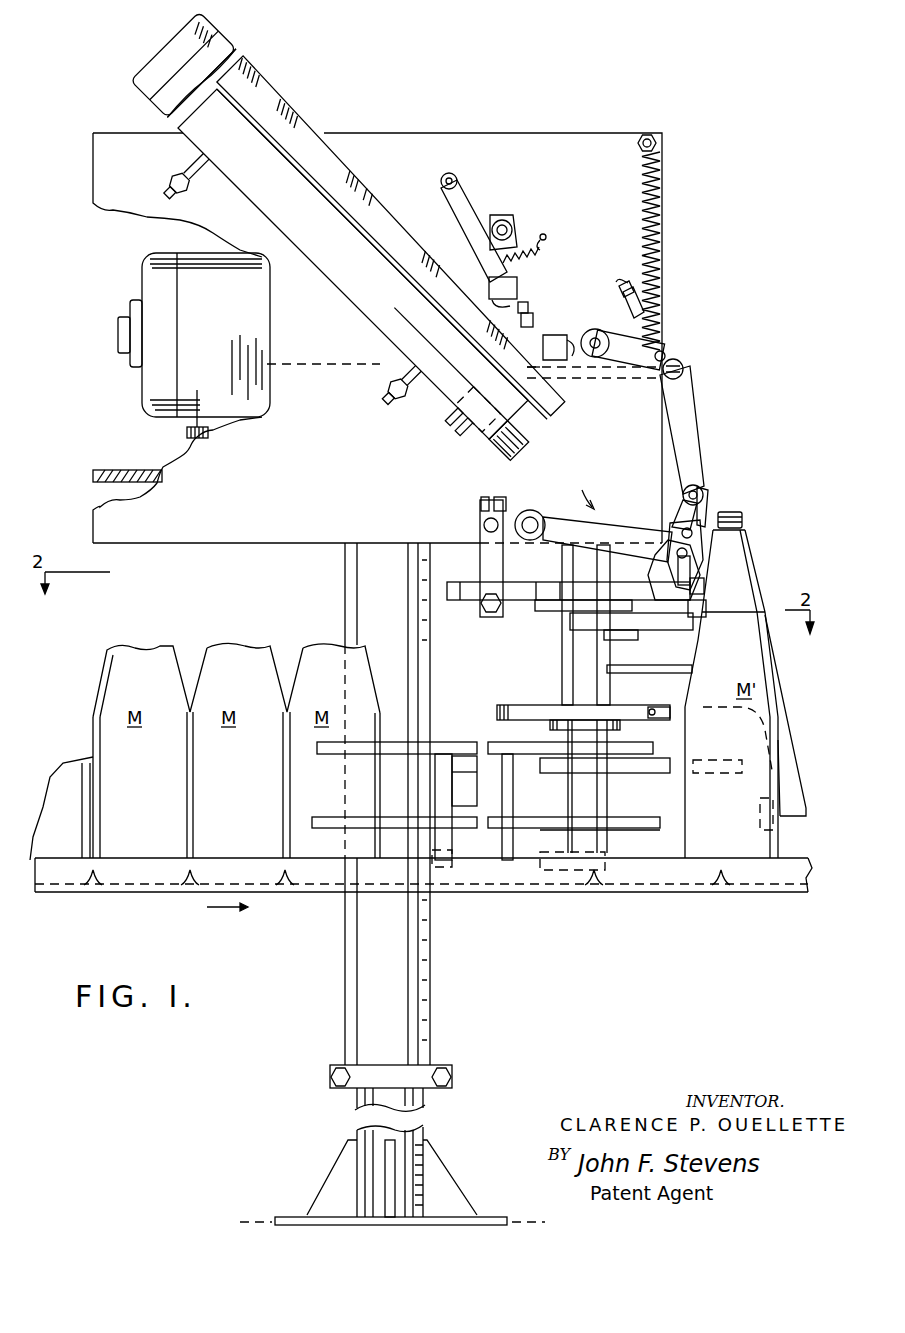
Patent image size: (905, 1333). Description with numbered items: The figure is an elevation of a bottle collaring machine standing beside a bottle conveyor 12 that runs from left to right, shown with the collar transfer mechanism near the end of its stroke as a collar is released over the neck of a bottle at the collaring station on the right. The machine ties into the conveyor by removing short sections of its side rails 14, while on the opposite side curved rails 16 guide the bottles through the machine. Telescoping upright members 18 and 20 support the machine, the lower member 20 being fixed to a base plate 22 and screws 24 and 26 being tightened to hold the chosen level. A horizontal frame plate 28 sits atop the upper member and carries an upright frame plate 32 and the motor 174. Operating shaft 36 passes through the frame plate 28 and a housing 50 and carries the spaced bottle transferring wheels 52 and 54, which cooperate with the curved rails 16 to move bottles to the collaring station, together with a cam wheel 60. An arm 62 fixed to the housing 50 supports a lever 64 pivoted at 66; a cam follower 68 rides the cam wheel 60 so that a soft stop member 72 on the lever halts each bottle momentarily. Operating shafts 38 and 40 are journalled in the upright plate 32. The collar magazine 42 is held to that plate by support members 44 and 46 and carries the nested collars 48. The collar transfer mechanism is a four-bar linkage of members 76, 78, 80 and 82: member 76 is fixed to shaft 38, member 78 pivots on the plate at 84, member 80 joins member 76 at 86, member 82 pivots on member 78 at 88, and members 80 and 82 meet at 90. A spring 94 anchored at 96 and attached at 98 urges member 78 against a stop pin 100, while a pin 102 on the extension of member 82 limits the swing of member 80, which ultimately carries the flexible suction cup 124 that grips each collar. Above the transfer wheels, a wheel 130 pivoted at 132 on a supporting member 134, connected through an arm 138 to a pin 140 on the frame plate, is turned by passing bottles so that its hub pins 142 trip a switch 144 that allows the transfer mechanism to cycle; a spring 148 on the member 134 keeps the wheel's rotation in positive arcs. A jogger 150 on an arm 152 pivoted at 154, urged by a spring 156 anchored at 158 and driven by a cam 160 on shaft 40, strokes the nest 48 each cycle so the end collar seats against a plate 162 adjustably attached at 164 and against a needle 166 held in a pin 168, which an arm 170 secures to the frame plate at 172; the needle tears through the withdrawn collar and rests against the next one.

The bottle conveyor 12 is at (148, 890).
The side rails 14 is at (458, 742).
The curved rails 16 is at (497, 742).
The telescoping upright member 18 is at (394, 988).
The lower upright member 20 is at (399, 1107).
The base plate 22 is at (283, 1216).
The screw 24 is at (330, 1074).
The screw 26 is at (446, 1072).
The horizontal frame plate 28 is at (128, 470).
The upright frame plate 32 is at (294, 475).
The operating shaft 36 is at (560, 730).
The operating shaft 38 is at (530, 510).
The operating shaft 40 is at (506, 225).
The collar magazine 42 is at (364, 260).
The support member 44 is at (178, 176).
The support member 46 is at (398, 390).
The nested collars 48 is at (328, 167).
The housing 50 is at (594, 676).
The bottle transferring wheel 52 is at (640, 773).
The bottle transferring wheel 54 is at (664, 830).
The cam wheel 60 is at (540, 705).
The arm 62 is at (640, 676).
The lever 64 is at (786, 768).
The pivot 66 is at (700, 702).
The cam follower 68 is at (670, 707).
The stop member 72 is at (758, 812).
The linkage drive member 76 is at (577, 541).
The linkage member 78 is at (630, 362).
The linkage member 80 is at (678, 513).
The linkage member 82 is at (694, 445).
The pivot 84 is at (603, 333).
The pivot pin 86 is at (698, 560).
The pivot 88 is at (684, 366).
The pivot 90 is at (700, 484).
The spring 94 is at (658, 192).
The spring anchor 96 is at (658, 140).
The spring attachment 98 is at (664, 352).
The stop pin 100 is at (640, 287).
The pin 102 is at (710, 508).
The suction cup 124 is at (704, 590).
The wheel 130 is at (690, 630).
The pivot 132 is at (636, 640).
The supporting member 134 is at (464, 587).
The arm 138 is at (498, 572).
The pin 140 is at (486, 521).
The pin 142 is at (660, 555).
The switch 144 is at (704, 614).
The spring 148 is at (558, 612).
The jogger 150 is at (516, 290).
The arm 152 is at (470, 203).
The pivot 154 is at (452, 176).
The spring 156 is at (542, 248).
The spring anchor 158 is at (547, 235).
The cam 160 is at (513, 228).
The plate 162 is at (520, 412).
The adjustable attachment 164 is at (472, 408).
The needle 166 is at (558, 380).
The pin 168 is at (566, 380).
The arm 170 is at (535, 322).
The attachment point 172 is at (530, 306).
The motor 174 is at (232, 313).